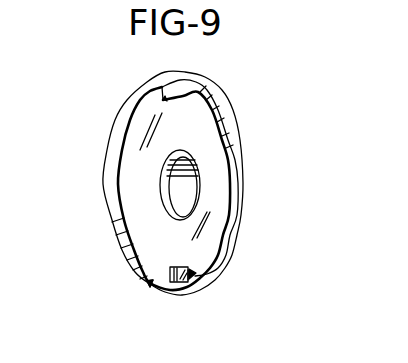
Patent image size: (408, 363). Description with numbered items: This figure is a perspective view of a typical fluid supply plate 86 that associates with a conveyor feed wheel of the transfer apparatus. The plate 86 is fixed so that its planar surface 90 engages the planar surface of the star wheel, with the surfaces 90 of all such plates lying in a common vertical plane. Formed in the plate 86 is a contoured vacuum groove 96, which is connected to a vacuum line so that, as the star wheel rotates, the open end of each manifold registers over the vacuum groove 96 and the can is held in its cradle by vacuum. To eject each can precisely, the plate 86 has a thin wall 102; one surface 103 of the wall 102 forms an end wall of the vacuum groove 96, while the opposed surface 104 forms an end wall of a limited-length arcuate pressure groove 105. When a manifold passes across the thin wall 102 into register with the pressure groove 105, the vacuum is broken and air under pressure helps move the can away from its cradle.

The fluid supply plate 86 is at (110, 192).
The planar surface 90 is at (216, 158).
The vacuum groove 96 is at (183, 90).
The thin wall 102 is at (194, 279).
The surface of thin wall 103 is at (196, 272).
The opposed surface of thin wall 104 is at (178, 284).
The pressure groove 105 is at (150, 283).